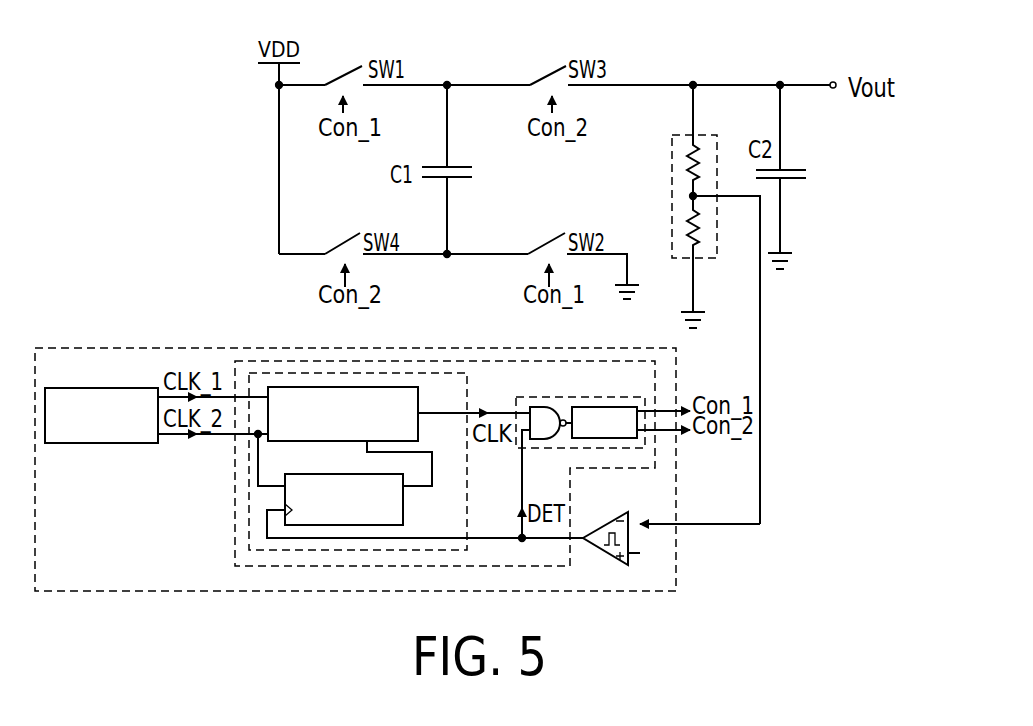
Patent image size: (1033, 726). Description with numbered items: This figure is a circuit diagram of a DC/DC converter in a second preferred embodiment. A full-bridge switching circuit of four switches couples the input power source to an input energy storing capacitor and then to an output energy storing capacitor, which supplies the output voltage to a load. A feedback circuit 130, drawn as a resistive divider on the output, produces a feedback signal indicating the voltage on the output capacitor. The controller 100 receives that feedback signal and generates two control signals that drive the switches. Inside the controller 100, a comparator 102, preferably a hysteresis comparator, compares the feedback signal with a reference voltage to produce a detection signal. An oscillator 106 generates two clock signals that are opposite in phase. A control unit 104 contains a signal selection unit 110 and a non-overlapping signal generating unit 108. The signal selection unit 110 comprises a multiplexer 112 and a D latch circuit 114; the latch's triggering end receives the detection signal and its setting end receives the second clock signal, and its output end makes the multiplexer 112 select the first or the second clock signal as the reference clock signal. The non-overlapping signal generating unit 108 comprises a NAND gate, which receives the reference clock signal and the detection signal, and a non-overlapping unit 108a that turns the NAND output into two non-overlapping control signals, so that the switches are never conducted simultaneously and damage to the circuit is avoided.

The controller 100 is at (255, 357).
The comparator 102 is at (597, 547).
The control unit 104 is at (237, 520).
The oscillator 106 is at (115, 443).
The non-overlapping signal generating unit 108 is at (580, 404).
The non-overlapping unit 108a is at (570, 397).
The signal selection unit 110 is at (465, 465).
The multiplexer 112 is at (418, 397).
The D latch circuit 114 is at (403, 497).
The feedback circuit 130 is at (673, 165).